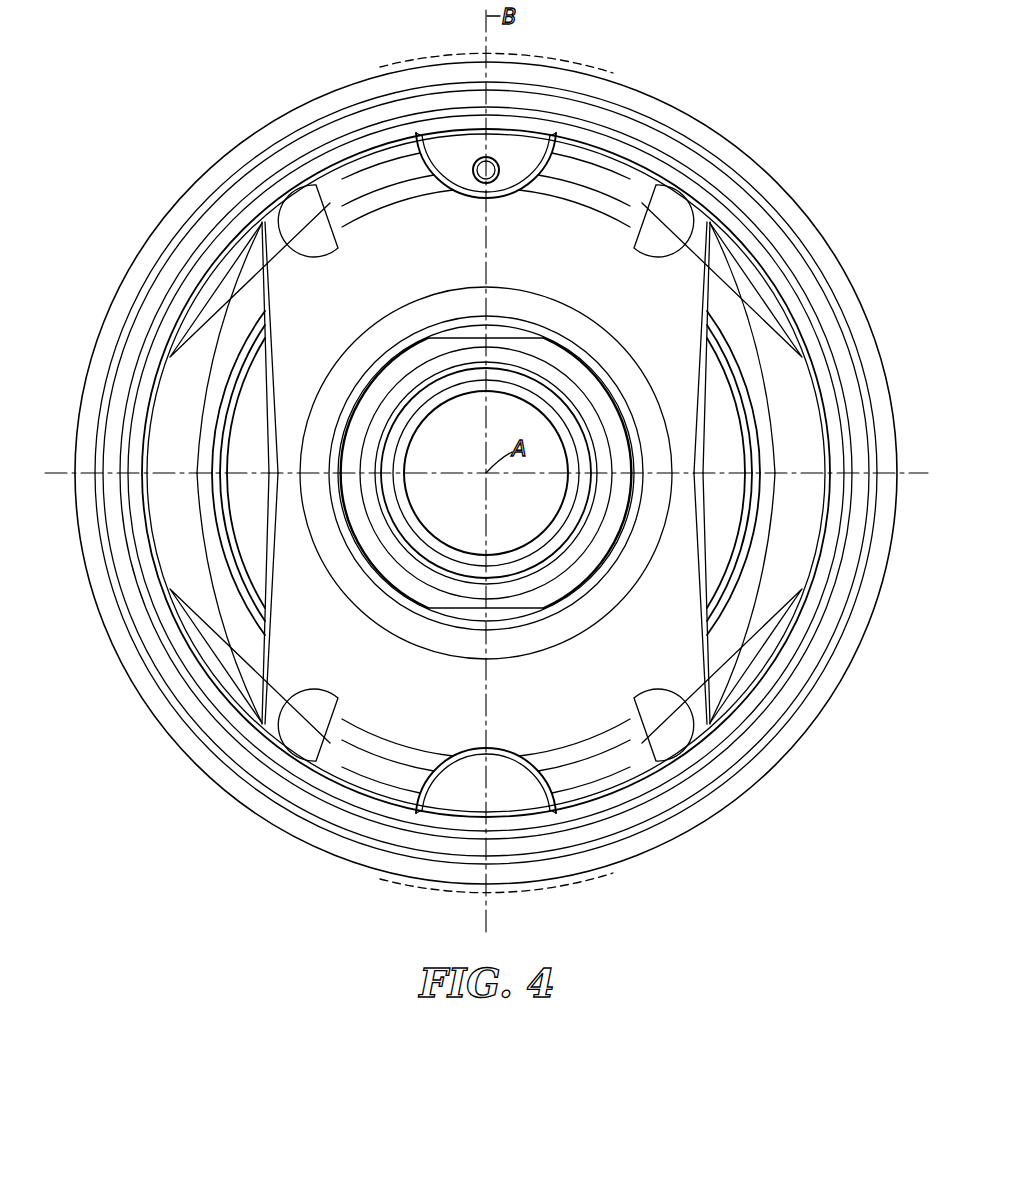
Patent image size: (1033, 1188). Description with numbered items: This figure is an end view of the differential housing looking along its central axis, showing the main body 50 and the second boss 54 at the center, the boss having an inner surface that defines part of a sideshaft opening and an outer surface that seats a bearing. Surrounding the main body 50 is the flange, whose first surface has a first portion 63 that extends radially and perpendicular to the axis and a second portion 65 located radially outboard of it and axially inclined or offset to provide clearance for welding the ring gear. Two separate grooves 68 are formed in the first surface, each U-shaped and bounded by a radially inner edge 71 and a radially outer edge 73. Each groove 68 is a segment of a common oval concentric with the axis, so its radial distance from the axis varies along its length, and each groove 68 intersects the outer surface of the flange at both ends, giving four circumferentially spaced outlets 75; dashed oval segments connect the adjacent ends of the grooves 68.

The main body 50 is at (808, 150).
The second boss 54 is at (583, 378).
The first portion 63 is at (115, 395).
The second portion 65 is at (84, 425).
The groove 68 is at (160, 652).
The inner edge 71 is at (333, 118).
The outer edge 73 is at (293, 140).
The outlet 75 is at (383, 72).